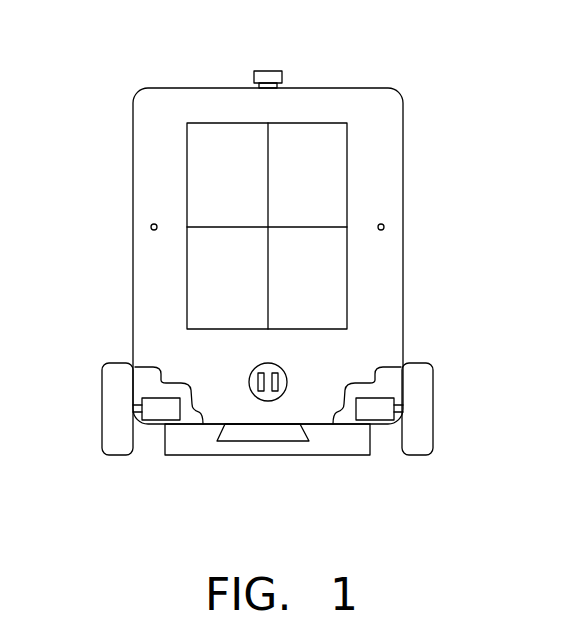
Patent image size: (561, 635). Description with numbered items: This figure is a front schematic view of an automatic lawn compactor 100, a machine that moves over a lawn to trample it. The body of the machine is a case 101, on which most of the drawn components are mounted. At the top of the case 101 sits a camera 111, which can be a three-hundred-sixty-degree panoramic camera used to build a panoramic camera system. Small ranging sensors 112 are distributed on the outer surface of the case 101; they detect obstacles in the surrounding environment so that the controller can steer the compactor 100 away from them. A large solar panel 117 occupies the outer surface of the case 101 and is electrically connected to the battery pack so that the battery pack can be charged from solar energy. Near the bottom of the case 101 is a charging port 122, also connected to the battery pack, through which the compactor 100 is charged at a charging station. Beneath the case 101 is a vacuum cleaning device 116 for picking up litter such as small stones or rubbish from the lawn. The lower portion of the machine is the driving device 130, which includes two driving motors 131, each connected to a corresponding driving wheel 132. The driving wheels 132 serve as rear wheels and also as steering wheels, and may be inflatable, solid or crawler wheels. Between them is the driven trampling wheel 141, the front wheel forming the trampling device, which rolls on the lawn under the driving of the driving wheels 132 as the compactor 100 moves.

The automatic lawn compactor 100 is at (281, 47).
The case 101 is at (378, 275).
The camera 111 is at (278, 77).
The ranging sensor 112 is at (151, 227).
The vacuum cleaning device 116 is at (243, 430).
The solar panel 117 is at (333, 177).
The charging port 122 is at (268, 401).
The driving device 130 is at (276, 450).
The driving motor 131 is at (153, 408).
The driving wheel 132 is at (112, 413).
The driven trampling wheel 141 is at (343, 441).